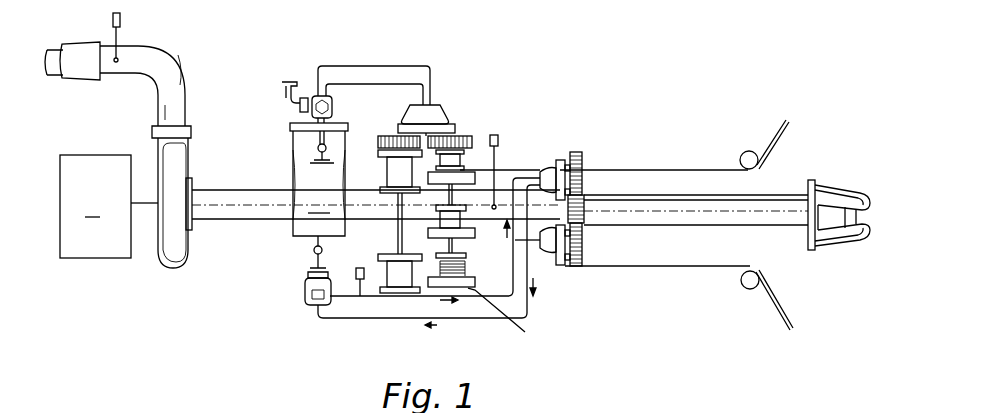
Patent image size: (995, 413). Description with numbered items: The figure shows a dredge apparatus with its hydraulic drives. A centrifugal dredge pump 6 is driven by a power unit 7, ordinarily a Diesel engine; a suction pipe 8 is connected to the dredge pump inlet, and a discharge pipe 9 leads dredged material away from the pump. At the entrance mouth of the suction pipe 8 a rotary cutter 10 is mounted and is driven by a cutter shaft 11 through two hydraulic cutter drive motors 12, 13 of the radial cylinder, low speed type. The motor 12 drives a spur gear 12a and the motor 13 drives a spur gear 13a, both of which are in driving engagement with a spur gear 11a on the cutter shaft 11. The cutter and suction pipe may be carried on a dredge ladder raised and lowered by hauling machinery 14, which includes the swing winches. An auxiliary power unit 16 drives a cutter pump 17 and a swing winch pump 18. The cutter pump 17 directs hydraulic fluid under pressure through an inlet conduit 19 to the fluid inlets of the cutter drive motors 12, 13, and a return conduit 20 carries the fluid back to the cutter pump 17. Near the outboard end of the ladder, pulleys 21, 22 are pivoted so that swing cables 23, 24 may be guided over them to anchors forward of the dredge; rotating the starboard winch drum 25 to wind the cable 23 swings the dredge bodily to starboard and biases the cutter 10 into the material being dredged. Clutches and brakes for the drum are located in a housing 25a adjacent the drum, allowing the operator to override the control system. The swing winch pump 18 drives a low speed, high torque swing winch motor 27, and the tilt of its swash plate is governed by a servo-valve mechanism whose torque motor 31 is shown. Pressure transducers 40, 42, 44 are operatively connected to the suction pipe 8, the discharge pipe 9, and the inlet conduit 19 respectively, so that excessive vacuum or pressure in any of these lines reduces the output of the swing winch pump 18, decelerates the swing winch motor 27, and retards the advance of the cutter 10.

The dredge pump 6 is at (178, 262).
The power unit 7 is at (109, 206).
The suction pipe 8 is at (232, 190).
The discharge pipe 9 is at (183, 80).
The rotary cutter 10 is at (846, 190).
The cutter shaft 11 is at (768, 208).
The spur gear 11a is at (586, 202).
The hydraulic cutter drive motor 12 is at (546, 266).
The spur gear 12a is at (584, 258).
The hydraulic cutter drive motor 13 is at (546, 170).
The spur gear 13a is at (584, 156).
The hauling machinery 14 is at (396, 250).
The auxiliary power unit 16 is at (319, 179).
The cutter pump 17 is at (304, 292).
The swing winch pump 18 is at (332, 105).
The inlet conduit 19 is at (394, 300).
The return conduit 20 is at (468, 318).
The pulley 21 is at (748, 288).
The pulley 22 is at (744, 156).
The swing cable 23 is at (786, 316).
The swing cable 24 is at (792, 126).
The starboard winch drum 25 is at (466, 270).
The housing 25a is at (511, 320).
The swing winch motor 27 is at (440, 112).
The torque motor 31 is at (279, 105).
The pressure transducer 40 is at (494, 135).
The pressure transducer 42 is at (124, 24).
The pressure transducer 44 is at (358, 268).